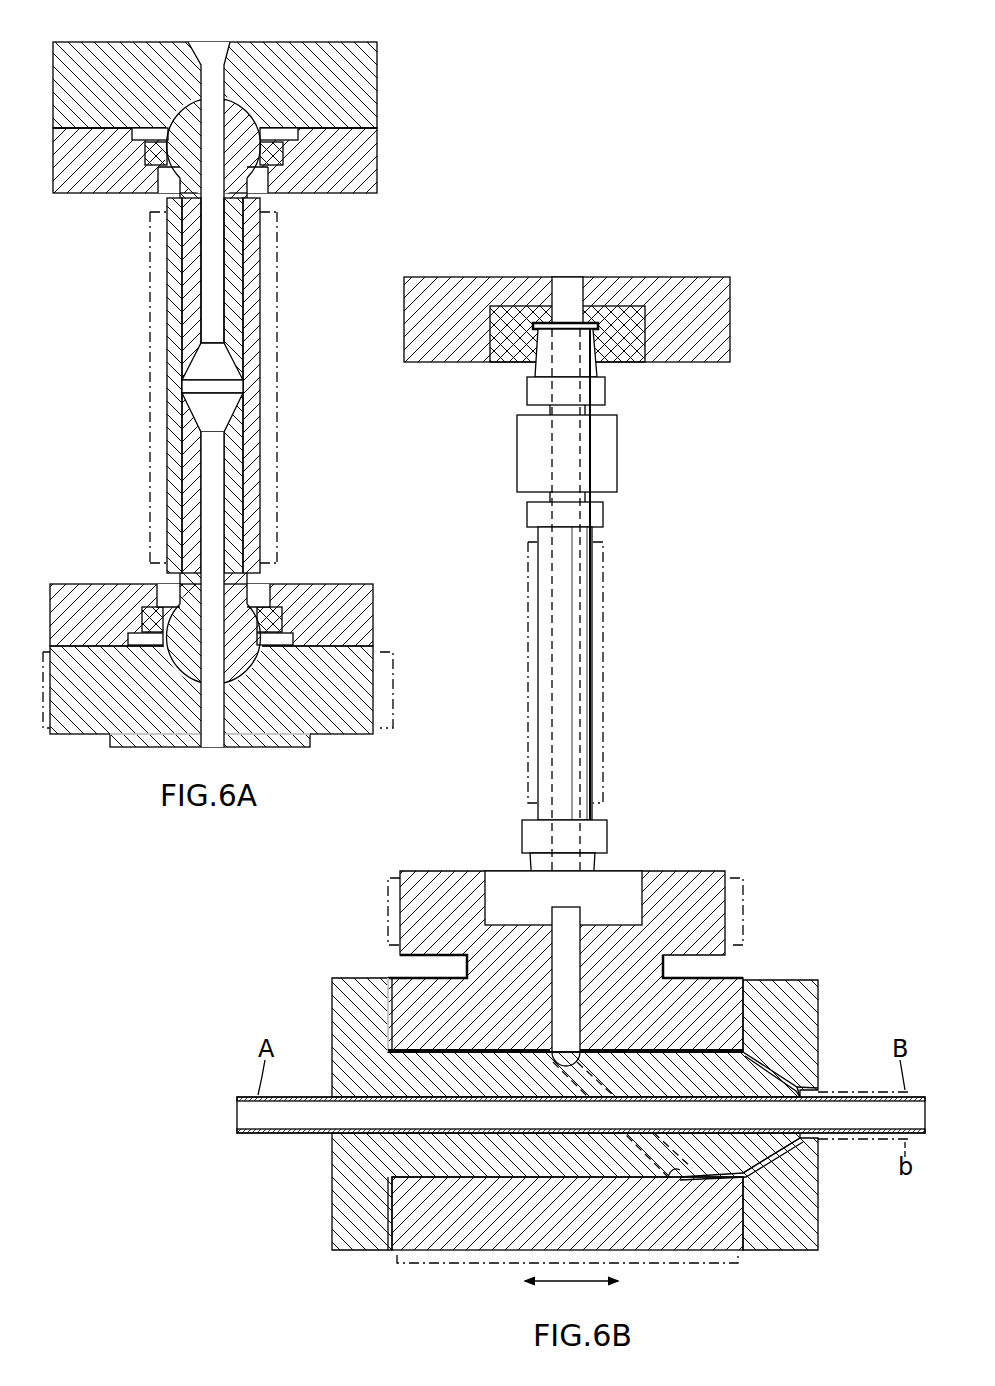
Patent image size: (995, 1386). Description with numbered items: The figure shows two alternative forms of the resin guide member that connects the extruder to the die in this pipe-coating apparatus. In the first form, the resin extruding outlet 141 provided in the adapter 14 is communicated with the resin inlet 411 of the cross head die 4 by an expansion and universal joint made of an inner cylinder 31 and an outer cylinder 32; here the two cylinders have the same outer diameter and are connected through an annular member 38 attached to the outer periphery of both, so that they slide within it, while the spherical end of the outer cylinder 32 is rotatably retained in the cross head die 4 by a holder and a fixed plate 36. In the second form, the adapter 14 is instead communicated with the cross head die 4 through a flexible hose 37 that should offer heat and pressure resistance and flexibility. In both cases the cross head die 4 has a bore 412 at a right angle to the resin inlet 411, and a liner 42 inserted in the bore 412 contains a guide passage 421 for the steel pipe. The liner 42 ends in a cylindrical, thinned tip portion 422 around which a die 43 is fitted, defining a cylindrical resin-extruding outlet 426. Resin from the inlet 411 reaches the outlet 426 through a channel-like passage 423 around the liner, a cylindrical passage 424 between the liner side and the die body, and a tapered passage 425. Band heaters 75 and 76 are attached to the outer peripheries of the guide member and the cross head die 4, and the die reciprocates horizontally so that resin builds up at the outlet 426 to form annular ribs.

In FIG. 6A, the adapter 14 is at (373, 90).
In FIG. 6B, the adapter 14 is at (720, 310).
In FIG. 6A, the resin extruding outlet 141 is at (215, 70).
In FIG. 6B, the resin extruding outlet 141 is at (572, 278).
In FIG. 6A, the inner cylinder 31 is at (240, 265).
In FIG. 6A, the outer cylinder 32 is at (235, 470).
In FIG. 6A, the fixed plate 36 is at (318, 583).
In FIG. 6B, the flexible hose 37 is at (592, 642).
In FIG. 6A, the annular member 38 is at (175, 378).
In FIG. 6B, the cross head die 4 is at (723, 985).
In FIG. 6B, the die 43 is at (802, 987).
In FIG. 6B, the band heater 75 is at (388, 882).
In FIG. 6B, the band heater 76 is at (679, 1265).
In FIG. 6B, the resin inlet 411 is at (560, 988).
In FIG. 6B, the bore 412 is at (465, 1053).
In FIG. 6B, the guide passage 421 is at (395, 1125).
In FIG. 6B, the liner 42 is at (470, 1170).
In FIG. 6B, the tip portion 422 is at (805, 1140).
In FIG. 6B, the channel-like passage 423 is at (678, 1180).
In FIG. 6B, the cylindrical passage 424 is at (640, 1050).
In FIG. 6B, the tapered passage 425 is at (770, 1170).
In FIG. 6B, the cylindrical resin-extruding outlet 426 is at (805, 1085).